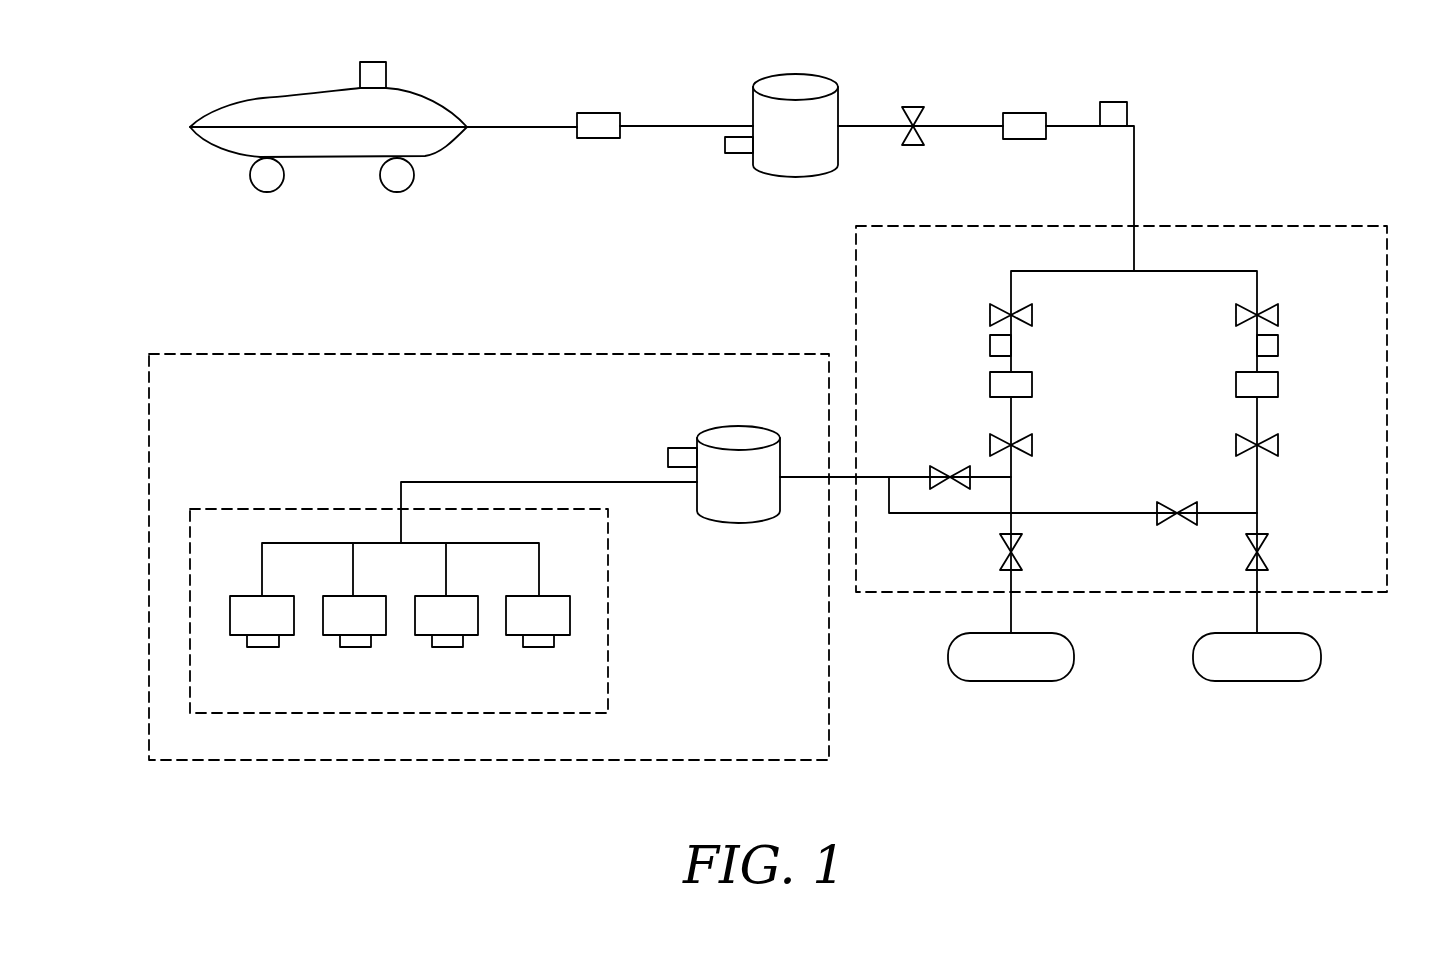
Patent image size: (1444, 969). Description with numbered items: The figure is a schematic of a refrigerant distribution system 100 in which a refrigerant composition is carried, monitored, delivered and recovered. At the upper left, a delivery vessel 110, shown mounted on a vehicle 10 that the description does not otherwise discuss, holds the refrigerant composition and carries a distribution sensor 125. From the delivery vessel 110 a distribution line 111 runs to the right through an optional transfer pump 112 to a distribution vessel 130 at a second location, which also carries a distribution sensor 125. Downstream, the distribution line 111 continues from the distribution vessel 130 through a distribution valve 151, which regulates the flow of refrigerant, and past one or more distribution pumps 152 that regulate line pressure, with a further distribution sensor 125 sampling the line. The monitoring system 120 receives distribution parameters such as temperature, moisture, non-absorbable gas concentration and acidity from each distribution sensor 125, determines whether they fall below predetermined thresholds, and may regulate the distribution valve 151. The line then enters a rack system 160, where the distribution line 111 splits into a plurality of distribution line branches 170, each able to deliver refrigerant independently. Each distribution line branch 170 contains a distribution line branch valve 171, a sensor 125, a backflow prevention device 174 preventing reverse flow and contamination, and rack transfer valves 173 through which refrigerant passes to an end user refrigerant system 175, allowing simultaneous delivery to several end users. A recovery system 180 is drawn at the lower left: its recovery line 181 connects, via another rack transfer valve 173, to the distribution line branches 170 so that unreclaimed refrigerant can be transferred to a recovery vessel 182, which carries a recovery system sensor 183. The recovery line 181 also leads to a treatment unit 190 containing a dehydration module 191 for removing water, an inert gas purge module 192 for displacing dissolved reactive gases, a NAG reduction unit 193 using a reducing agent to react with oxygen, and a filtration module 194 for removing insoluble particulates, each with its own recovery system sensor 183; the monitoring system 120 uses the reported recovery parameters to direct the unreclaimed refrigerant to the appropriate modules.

The vehicle 10 is at (190, 127).
The refrigerant distribution system 100 is at (1326, 64).
The delivery vessel 110 is at (262, 97).
The distribution line 111 is at (520, 126).
The transfer pump 112 is at (598, 113).
The monitoring system 120 is at (232, 298).
The distribution sensor 125 is at (373, 62).
The distribution vessel 130 is at (795, 75).
The distribution valve 151 is at (912, 107).
The distribution pump 152 is at (1022, 113).
The rack system 160 is at (1368, 226).
The distribution line branch 170 is at (1011, 271).
The distribution line branch valve 171 is at (990, 315).
The rack transfer valve 173 is at (1288, 548).
The backflow prevention device 174 is at (990, 385).
The end user refrigerant system 175 is at (978, 633).
The recovery system 180 is at (166, 354).
The recovery line 181 is at (547, 482).
The recovery vessel 182 is at (738, 426).
The recovery system sensor 183 is at (683, 448).
The treatment unit 190 is at (216, 509).
The dehydration module 191 is at (254, 596).
The inert gas purge module 192 is at (337, 596).
The NAG reduction unit 193 is at (430, 596).
The filtration module 194 is at (523, 596).